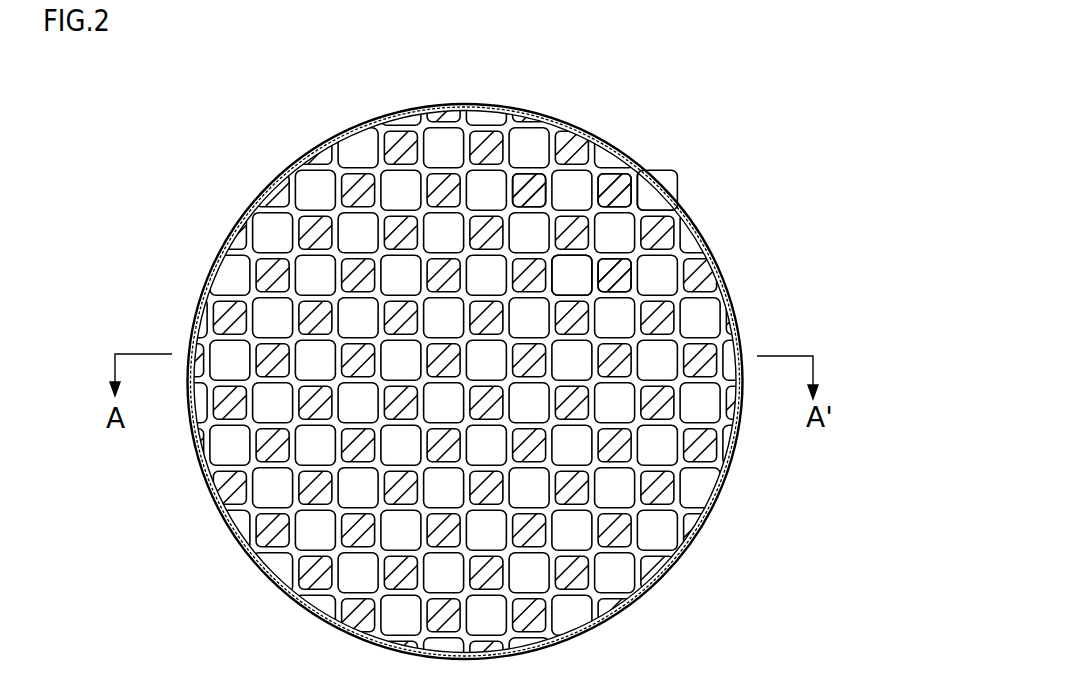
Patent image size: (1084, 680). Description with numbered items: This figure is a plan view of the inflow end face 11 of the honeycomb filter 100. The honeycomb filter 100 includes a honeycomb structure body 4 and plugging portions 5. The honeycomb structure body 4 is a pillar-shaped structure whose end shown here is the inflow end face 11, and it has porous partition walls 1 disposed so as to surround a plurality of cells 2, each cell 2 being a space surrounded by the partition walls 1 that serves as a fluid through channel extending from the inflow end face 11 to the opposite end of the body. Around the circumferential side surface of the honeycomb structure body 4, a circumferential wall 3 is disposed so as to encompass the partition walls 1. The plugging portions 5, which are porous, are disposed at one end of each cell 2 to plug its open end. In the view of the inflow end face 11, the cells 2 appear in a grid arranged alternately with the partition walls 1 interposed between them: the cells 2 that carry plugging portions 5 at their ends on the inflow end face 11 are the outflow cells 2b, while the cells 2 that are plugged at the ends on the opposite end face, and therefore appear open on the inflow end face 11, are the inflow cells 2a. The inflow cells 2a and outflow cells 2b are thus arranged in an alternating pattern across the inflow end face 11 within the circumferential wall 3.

The honeycomb filter 100 is at (808, 70).
The honeycomb structure body 4 is at (752, 308).
The circumferential wall 3 is at (683, 552).
The inflow end face 11 is at (268, 155).
The partition walls 1 is at (626, 200).
The plugging portions 5 is at (550, 187).
The cells 2 is at (681, 221).
The inflow cells 2a is at (605, 282).
The outflow cells 2b is at (572, 277).